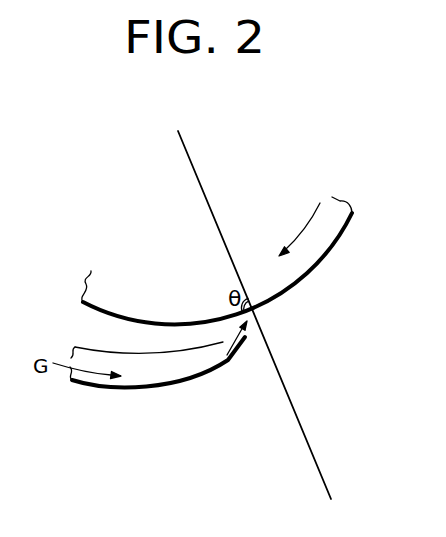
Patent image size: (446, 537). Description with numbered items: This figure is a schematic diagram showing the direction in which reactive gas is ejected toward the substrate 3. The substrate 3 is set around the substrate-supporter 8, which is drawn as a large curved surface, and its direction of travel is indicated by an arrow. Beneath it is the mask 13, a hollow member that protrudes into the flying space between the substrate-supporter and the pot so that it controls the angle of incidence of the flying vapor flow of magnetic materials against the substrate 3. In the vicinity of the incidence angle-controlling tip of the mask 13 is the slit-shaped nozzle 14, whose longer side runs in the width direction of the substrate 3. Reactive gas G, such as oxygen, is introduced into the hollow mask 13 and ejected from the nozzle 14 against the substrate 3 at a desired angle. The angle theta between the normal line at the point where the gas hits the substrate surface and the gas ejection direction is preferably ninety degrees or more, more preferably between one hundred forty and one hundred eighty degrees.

The substrate 3 is at (323, 259).
The substrate-supporter 8 is at (327, 228).
The mask 13 is at (172, 389).
The slit-shaped nozzle 14 is at (221, 343).